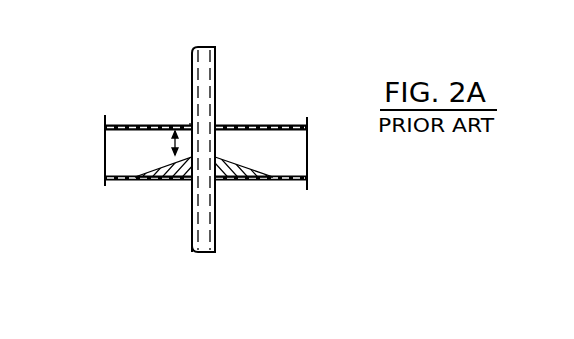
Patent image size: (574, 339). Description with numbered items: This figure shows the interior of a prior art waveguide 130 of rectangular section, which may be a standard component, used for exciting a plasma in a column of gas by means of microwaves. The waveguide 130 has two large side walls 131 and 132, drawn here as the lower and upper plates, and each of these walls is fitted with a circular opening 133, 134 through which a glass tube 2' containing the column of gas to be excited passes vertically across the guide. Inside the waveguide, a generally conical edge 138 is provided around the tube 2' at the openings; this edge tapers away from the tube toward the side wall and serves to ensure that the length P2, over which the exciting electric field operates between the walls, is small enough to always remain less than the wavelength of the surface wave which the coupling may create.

The waveguide 130 is at (102, 153).
The side wall 131 is at (300, 181).
The side wall 132 is at (258, 122).
The circular opening 133 is at (218, 180).
The circular opening 134 is at (187, 117).
The generally conical edge 138 is at (217, 166).
The length over which the exciting electric field operates P2 is at (163, 144).
The glass tube 2' is at (220, 161).